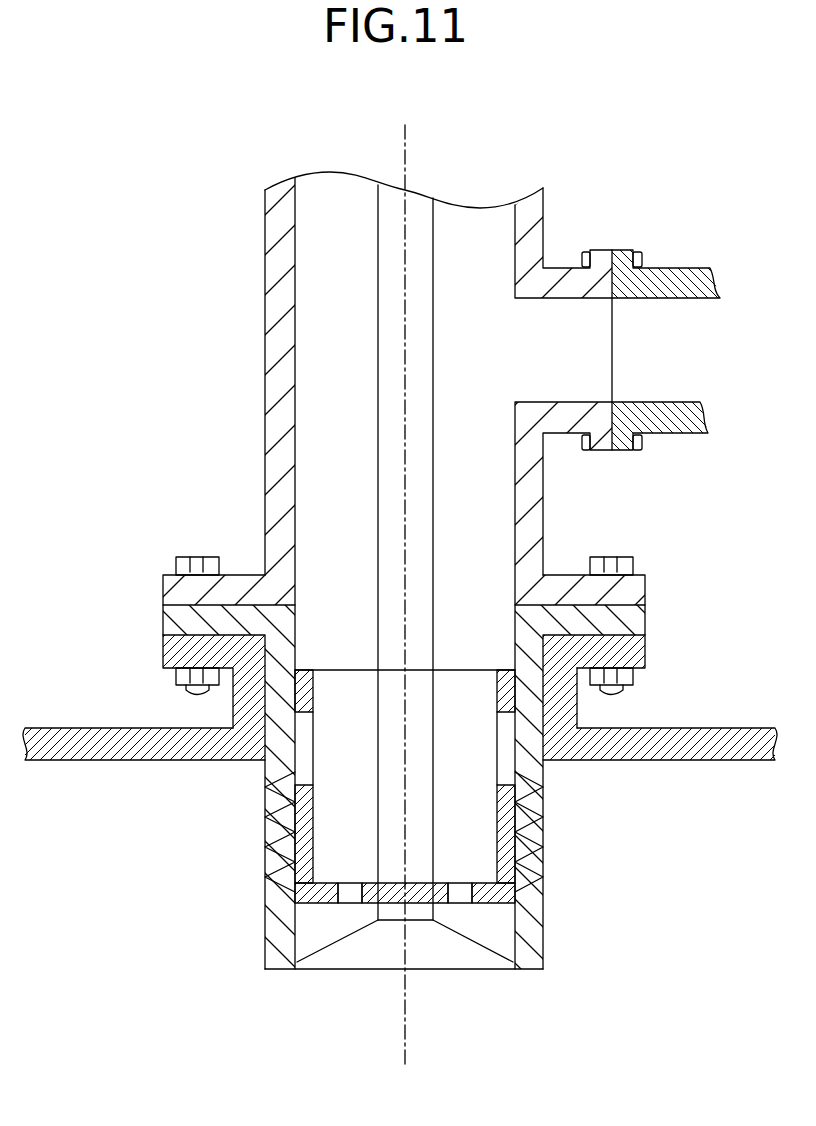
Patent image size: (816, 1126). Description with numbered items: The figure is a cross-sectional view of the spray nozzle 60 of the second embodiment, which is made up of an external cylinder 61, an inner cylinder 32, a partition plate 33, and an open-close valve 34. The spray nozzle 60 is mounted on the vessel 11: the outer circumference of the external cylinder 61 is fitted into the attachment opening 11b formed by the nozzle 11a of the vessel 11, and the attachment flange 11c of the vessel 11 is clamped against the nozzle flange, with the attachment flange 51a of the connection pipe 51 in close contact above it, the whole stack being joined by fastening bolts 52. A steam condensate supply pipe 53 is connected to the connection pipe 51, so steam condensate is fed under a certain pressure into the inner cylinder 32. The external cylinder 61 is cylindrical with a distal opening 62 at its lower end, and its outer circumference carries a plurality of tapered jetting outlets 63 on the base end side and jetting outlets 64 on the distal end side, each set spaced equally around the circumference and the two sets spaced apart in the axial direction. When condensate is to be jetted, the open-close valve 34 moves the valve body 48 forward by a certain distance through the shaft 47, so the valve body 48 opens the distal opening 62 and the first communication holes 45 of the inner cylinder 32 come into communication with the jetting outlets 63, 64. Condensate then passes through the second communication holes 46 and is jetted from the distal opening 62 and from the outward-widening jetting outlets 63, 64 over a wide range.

The vessel 11 is at (50, 726).
The nozzle 11a is at (240, 708).
The attachment opening 11b is at (556, 731).
The attachment flange 11c is at (640, 652).
The inner cylinder 32 is at (521, 833).
The partition plate 33 is at (483, 908).
The open-close valve 34 is at (342, 972).
The first communication holes 45 is at (300, 768).
The second communication holes 46 is at (343, 897).
The shaft 47 is at (393, 414).
The valve body 48 is at (383, 962).
The connection pipe 51 is at (262, 278).
The attachment flange 51a is at (164, 590).
The fastening bolts 52 is at (628, 565).
The steam condensate supply pipe 53 is at (682, 426).
The spray nozzle 60 is at (176, 437).
The external cylinder 61 is at (548, 938).
The distal opening 62 is at (299, 952).
The jetting outlets 63 is at (282, 808).
The jetting outlets 64 is at (278, 857).